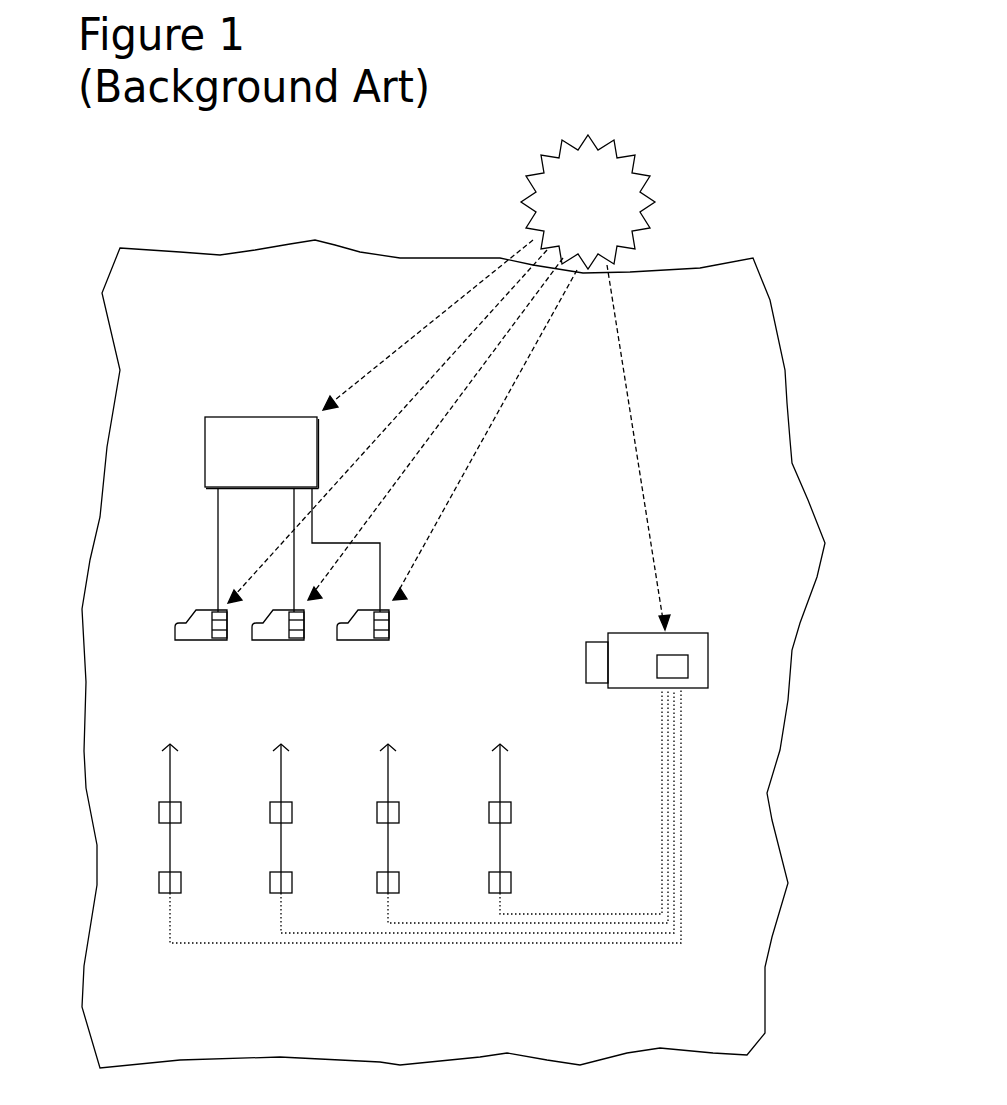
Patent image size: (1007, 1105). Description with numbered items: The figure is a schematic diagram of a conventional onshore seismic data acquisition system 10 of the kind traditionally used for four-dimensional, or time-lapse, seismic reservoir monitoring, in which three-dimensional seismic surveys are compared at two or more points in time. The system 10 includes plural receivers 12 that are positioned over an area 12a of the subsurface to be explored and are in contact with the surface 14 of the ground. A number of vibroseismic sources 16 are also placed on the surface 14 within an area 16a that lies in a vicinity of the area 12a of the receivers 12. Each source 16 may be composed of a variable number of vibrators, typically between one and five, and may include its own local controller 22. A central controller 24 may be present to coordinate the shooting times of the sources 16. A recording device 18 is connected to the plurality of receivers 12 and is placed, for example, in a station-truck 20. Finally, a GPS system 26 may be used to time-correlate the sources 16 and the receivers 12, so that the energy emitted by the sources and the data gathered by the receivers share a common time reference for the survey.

The system 10 is at (322, 180).
The receivers 12 is at (159, 810).
The area 12a is at (745, 945).
The surface 14 is at (70, 656).
The vibroseismic sources 16 is at (197, 632).
The area 16a is at (778, 471).
The recording device 18 is at (680, 667).
The station-truck 20 is at (697, 624).
The local controller 22 is at (218, 641).
The central controller 24 is at (223, 417).
The GPS system 26 is at (622, 155).